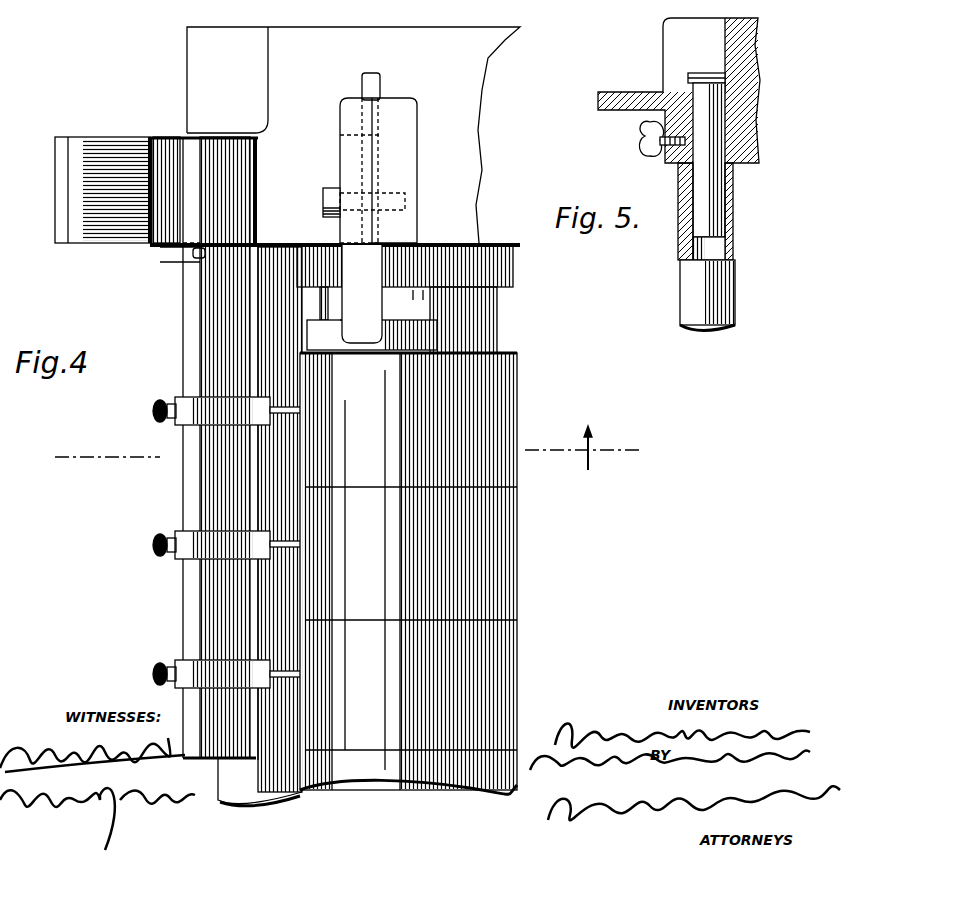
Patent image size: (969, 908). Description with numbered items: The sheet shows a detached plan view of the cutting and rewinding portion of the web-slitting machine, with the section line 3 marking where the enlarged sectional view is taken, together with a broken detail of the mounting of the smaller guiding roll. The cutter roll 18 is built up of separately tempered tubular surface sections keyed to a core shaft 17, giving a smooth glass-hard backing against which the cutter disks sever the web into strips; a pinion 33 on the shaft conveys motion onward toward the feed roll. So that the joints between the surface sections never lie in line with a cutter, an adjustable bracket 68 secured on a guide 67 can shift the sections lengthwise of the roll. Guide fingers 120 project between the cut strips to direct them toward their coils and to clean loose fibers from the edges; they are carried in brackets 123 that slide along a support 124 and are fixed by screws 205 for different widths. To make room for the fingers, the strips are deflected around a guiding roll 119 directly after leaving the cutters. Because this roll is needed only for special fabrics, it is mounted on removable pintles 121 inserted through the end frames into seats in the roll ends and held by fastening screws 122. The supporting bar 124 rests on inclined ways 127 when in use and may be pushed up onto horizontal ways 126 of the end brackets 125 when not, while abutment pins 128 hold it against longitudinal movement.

In FIG. 4, the section line 3— 3 is at (343, 448).
In FIG. 4, the core shaft 17 is at (497, 332).
In FIG. 4, the cutter roll 18 is at (516, 395).
In FIG. 4, the pinion 33 is at (514, 270).
In FIG. 4, the guide 67 is at (418, 148).
In FIG. 4, the adjustable bracket 68 is at (340, 158).
In FIG. 4, the guiding roll 119 is at (297, 795).
In FIG. 5, the guiding roll 119 is at (733, 303).
In FIG. 4, the fingers 120 is at (302, 410).
In FIG. 5, the removable pintles 121 is at (707, 195).
In FIG. 5, the fastening screws 122 is at (648, 135).
In FIG. 4, the brackets 123 is at (178, 400).
In FIG. 4, the support 124 is at (183, 480).
In FIG. 4, the end brackets 125 is at (165, 250).
In FIG. 4, the horizontal ways 126 is at (152, 122).
In FIG. 4, the inclined ways 127 is at (170, 262).
In FIG. 4, the abutment pins 128 is at (193, 256).
In FIG. 4, the screws 205 is at (150, 413).